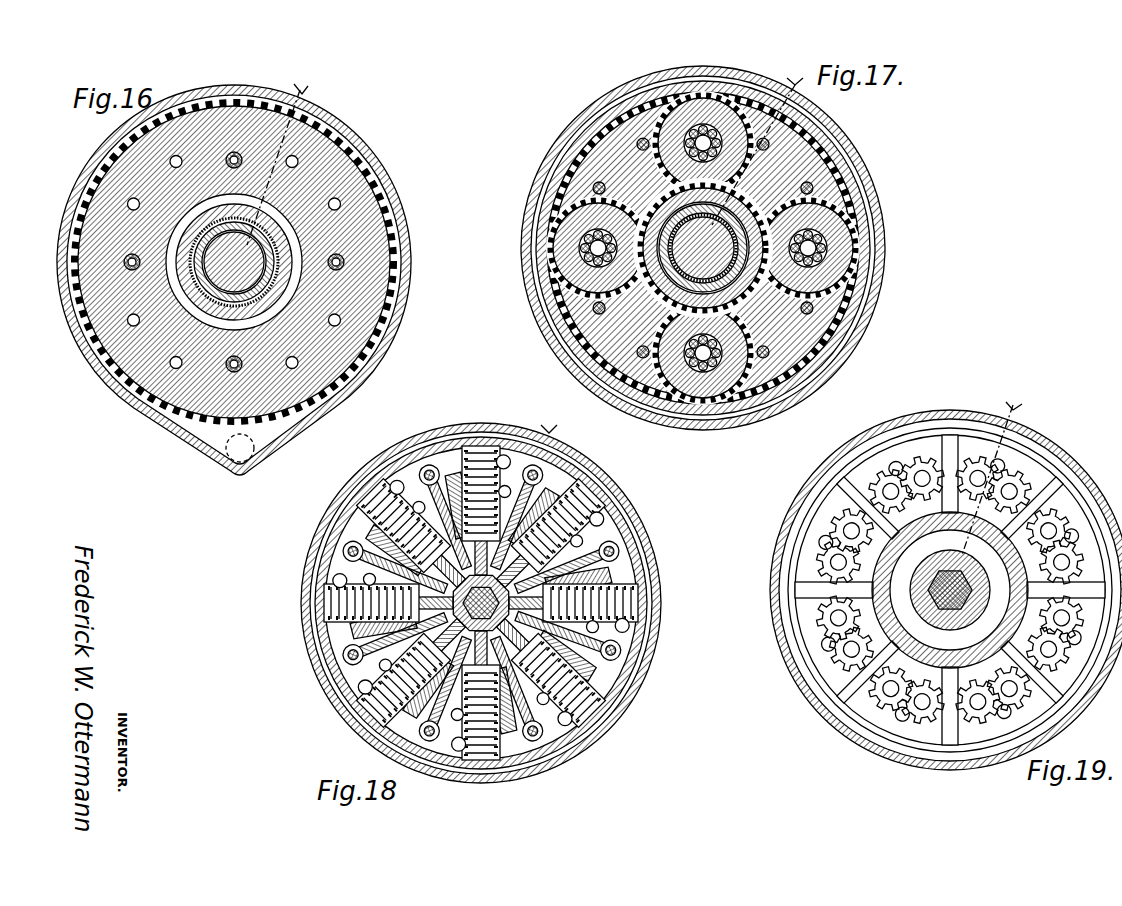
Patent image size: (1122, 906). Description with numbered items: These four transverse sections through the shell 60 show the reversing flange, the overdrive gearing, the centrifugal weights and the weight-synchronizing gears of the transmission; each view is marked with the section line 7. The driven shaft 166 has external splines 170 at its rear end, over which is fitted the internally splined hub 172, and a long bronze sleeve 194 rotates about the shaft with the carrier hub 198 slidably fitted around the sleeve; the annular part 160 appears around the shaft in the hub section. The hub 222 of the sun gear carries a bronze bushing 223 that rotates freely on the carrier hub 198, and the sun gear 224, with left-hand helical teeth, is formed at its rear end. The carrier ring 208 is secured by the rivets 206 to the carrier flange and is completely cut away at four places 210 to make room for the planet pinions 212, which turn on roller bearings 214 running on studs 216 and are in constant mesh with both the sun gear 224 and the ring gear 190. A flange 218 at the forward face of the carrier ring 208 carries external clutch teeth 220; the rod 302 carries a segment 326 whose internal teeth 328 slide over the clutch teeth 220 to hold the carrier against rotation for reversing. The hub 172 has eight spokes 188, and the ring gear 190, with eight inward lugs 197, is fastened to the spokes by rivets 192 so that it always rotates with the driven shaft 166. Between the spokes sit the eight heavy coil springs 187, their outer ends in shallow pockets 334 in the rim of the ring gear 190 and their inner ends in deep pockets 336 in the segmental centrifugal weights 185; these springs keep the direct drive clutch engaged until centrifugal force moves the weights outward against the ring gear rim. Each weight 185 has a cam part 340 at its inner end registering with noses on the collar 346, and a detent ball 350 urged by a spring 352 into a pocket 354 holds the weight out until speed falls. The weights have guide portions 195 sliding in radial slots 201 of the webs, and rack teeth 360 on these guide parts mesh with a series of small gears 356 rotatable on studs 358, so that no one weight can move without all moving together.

In FIG. 16, the shell 60 is at (234, 271).
In FIG. 17, the shell 60 is at (703, 244).
In FIG. 18, the shell 60 is at (481, 594).
In FIG. 19, the shell 60 is at (946, 580).
In FIG. 16, the section line 7- 7 is at (278, 153).
In FIG. 17, the section line 7- 7 is at (759, 140).
In FIG. 18, the section line 7- 7 is at (508, 510).
In FIG. 19, the section line 7- 7 is at (988, 491).
In FIG. 16, the flange 218 is at (234, 262).
In FIG. 16, the clutch teeth 220 is at (234, 255).
In FIG. 16, the rivets 206 is at (144, 213).
In FIG. 17, the rivets 206 is at (703, 248).
In FIG. 16, the studs 216 is at (234, 262).
In FIG. 17, the studs 216 is at (703, 353).
In FIG. 16, the bronze bushing 223 is at (234, 254).
In FIG. 17, the bronze bushing 223 is at (721, 233).
In FIG. 16, the bronze sleeve 194 is at (234, 262).
In FIG. 17, the bronze sleeve 194 is at (703, 248).
In FIG. 16, the driven shaft 166 is at (234, 262).
In FIG. 17, the driven shaft 166 is at (703, 248).
In FIG. 18, the driven shaft 166 is at (480, 602).
In FIG. 19, the driven shaft 166 is at (950, 590).
In FIG. 16, the hub 222 is at (216, 276).
In FIG. 16, the carrier hub 198 is at (234, 264).
In FIG. 17, the carrier hub 198 is at (713, 248).
In FIG. 16, the internal teeth 328 is at (234, 262).
In FIG. 16, the segment 326 is at (234, 285).
In FIG. 16, the rod 302 is at (255, 454).
In FIG. 17, the cut-away places 210 is at (703, 248).
In FIG. 17, the carrier ring 208 is at (703, 248).
In FIG. 17, the ring gear 190 is at (703, 248).
In FIG. 18, the ring gear 190 is at (508, 603).
In FIG. 19, the ring gear 190 is at (950, 590).
In FIG. 17, the planet pinions 212 is at (688, 144).
In FIG. 17, the roller bearings 214 is at (808, 248).
In FIG. 17, the sun gear 224 is at (600, 260).
In FIG. 18, the spokes 188 is at (497, 603).
In FIG. 18, the lugs 197 is at (493, 603).
In FIG. 18, the hub 172 is at (491, 603).
In FIG. 19, the hub 172 is at (950, 590).
In FIG. 18, the springs 187 is at (470, 510).
In FIG. 18, the centrifugal weights 185 is at (550, 539).
In FIG. 18, the shallow pockets 334 is at (600, 608).
In FIG. 18, the rivets 192 is at (552, 672).
In FIG. 19, the rivets 192 is at (950, 599).
In FIG. 18, the deep pockets 336 is at (493, 695).
In FIG. 18, the cam parts 340 is at (388, 610).
In FIG. 18, the spring 352 is at (468, 516).
In FIG. 18, the collar 346 is at (394, 561).
In FIG. 18, the detent ball 350 is at (572, 635).
In FIG. 18, the pocket 354 is at (446, 688).
In FIG. 18, the external splines 170 is at (482, 603).
In FIG. 19, the external splines 170 is at (950, 598).
In FIG. 19, the guide portion 195 is at (955, 590).
In FIG. 19, the radial slots 201 is at (962, 590).
In FIG. 19, the rack teeth 360 is at (1059, 600).
In FIG. 19, the small gears 356 is at (1052, 525).
In FIG. 19, the studs 358 is at (1074, 562).
In FIG. 19, the hub ring 160 is at (950, 590).